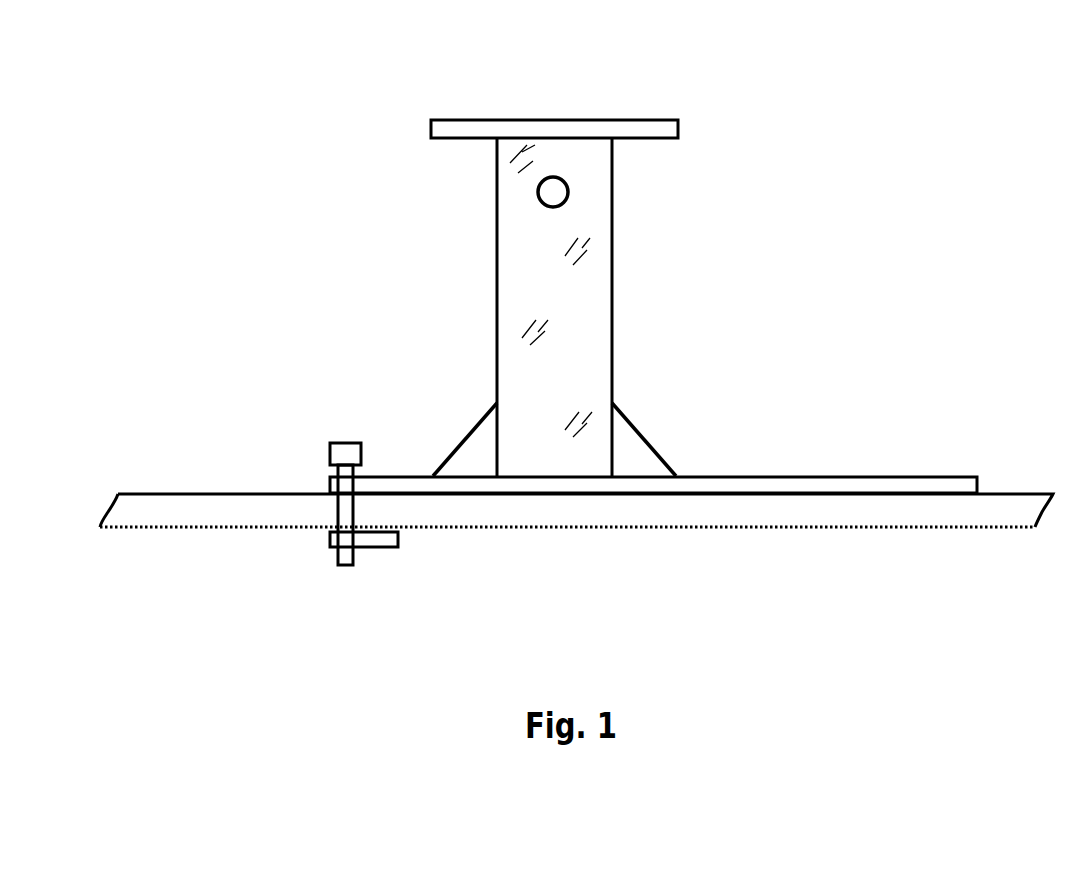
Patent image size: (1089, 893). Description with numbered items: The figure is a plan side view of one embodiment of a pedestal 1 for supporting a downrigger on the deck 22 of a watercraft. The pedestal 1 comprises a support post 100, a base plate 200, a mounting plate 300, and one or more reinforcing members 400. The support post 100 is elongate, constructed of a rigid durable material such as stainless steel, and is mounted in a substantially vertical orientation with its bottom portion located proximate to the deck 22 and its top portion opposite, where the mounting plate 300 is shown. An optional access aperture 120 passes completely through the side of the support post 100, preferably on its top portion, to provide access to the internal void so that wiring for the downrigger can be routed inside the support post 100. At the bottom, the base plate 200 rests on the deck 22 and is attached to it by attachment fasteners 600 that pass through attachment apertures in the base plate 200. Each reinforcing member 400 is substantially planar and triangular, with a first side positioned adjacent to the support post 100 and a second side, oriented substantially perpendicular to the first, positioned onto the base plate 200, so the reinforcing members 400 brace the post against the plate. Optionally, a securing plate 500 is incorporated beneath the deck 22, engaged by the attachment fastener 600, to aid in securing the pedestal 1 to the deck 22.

The pedestal 1 is at (350, 164).
The support post 100 is at (612, 237).
The access aperture 120 is at (497, 184).
The mounting plate 300 is at (677, 119).
The reinforcing member 400 is at (460, 437).
The base plate 200 is at (890, 477).
The deck 22 is at (218, 493).
The attachment fastener 600 is at (335, 444).
The securing plate 500 is at (400, 546).